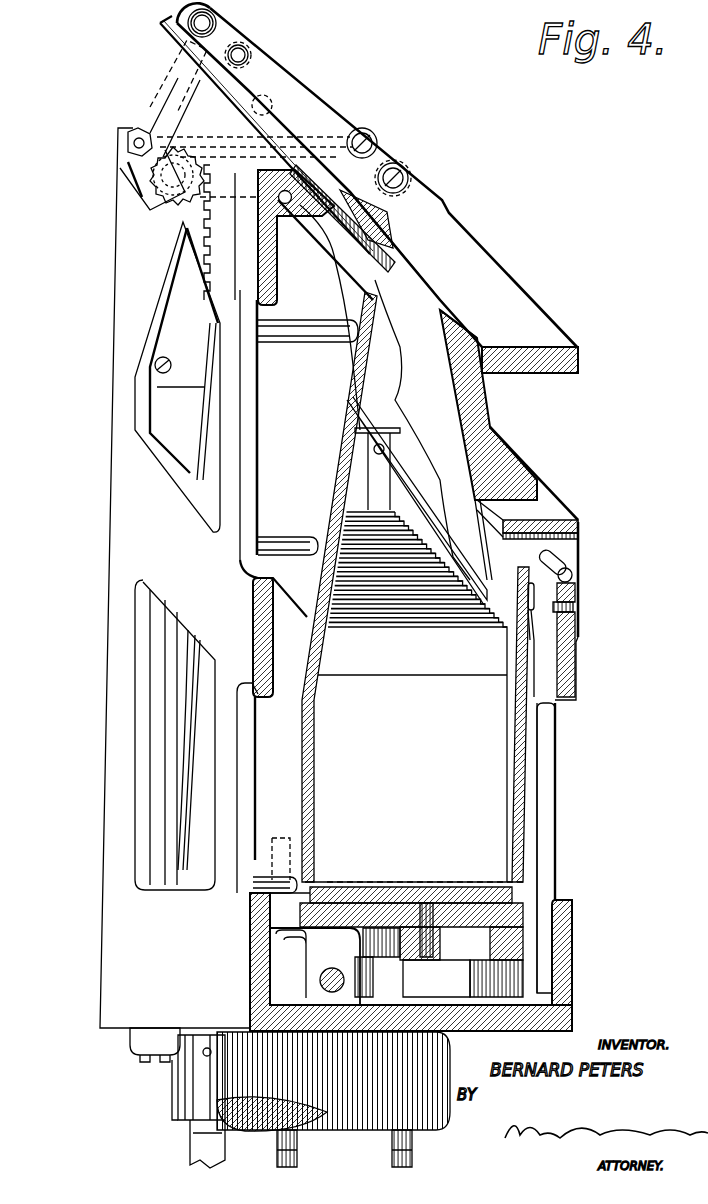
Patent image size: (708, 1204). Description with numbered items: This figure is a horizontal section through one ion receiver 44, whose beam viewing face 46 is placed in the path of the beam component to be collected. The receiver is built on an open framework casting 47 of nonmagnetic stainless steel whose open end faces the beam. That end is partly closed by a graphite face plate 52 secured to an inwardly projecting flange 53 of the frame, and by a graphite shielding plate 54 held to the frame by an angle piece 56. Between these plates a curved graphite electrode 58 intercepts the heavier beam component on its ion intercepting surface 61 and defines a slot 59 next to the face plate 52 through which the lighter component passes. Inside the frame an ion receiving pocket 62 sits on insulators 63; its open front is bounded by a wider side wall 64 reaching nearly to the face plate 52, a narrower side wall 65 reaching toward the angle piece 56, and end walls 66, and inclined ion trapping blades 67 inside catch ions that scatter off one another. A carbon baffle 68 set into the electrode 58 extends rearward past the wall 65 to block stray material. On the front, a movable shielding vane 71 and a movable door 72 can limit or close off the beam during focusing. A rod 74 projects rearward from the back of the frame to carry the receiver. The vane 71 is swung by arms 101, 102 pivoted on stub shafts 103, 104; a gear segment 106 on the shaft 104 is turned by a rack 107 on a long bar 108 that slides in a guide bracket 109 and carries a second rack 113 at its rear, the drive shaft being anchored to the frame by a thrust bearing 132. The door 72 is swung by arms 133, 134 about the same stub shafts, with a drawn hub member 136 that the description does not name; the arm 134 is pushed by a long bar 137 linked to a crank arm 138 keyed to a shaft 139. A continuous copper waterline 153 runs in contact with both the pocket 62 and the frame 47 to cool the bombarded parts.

The ion receiver 44 is at (92, 704).
The beam viewing face 46 is at (472, 270).
The open framework casting 47 is at (174, 556).
The graphite face plate 52 is at (350, 240).
The inwardly projecting flange 53 is at (300, 208).
The graphite shielding plate 54 is at (550, 502).
The angle piece 56 is at (578, 545).
The graphite electrode 58 is at (487, 400).
The slot 59 is at (385, 392).
The ion intercepting surface 61 is at (448, 312).
The ion receiving pocket 62 is at (544, 808).
The insulators 63 is at (310, 947).
The side wall 64 is at (338, 424).
The side wall 65 is at (528, 693).
The end walls 66 is at (345, 490).
The ion trapping blades 67 is at (330, 596).
The carbon baffle 68 is at (478, 425).
The shielding vane 71 is at (560, 336).
The door 72 is at (390, 230).
The rod 74 is at (355, 1125).
The arm 101 is at (327, 140).
The arm 102 is at (378, 160).
The stub shaft 103 is at (128, 145).
The stub shaft 104 is at (150, 200).
The gear segment 106 is at (165, 205).
The rack 107 is at (203, 275).
The long bar 108 is at (215, 333).
The guide bracket 109 is at (178, 1083).
The rack 113 is at (190, 1155).
The thrust bearing 132 is at (185, 1110).
The arm 133 is at (182, 62).
The arm 134 is at (185, 115).
The gear 136 is at (162, 170).
The long bar 137 is at (275, 118).
The crank arm 138 is at (310, 960).
The shaft 139 is at (318, 982).
The waterline 153 is at (305, 335).